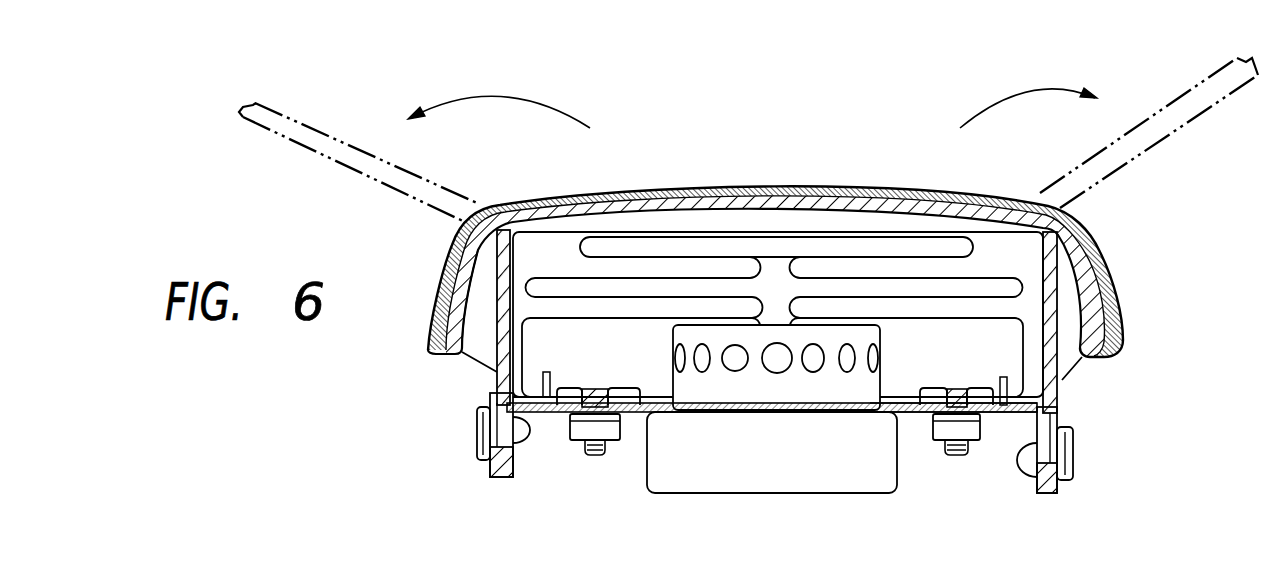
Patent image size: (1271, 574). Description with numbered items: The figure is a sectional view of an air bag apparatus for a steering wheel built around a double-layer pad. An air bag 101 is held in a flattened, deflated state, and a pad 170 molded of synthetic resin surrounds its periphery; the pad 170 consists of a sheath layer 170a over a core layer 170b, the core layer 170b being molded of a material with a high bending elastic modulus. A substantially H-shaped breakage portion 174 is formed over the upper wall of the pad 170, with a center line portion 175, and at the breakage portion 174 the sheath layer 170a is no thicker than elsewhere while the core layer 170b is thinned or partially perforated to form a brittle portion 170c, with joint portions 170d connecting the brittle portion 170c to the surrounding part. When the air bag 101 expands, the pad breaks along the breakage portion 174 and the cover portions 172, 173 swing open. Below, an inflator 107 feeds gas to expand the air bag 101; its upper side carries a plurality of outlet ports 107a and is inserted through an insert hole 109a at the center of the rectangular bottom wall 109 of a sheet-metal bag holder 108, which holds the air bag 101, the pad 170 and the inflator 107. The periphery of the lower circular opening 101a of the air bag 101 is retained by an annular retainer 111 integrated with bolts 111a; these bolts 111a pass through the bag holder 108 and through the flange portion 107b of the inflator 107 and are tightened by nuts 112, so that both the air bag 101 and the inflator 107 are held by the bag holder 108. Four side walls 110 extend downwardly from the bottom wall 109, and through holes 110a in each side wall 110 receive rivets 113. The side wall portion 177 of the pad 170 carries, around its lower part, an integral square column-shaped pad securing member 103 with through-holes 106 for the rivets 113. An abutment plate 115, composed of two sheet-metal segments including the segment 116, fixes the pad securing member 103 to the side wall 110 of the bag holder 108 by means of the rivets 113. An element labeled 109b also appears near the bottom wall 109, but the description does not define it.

The air bag 101 is at (680, 232).
The lower circular opening 101a is at (693, 402).
The pad securing member 103 is at (440, 349).
The through-holes 106 is at (480, 431).
The inflator 107 is at (680, 494).
The outlet ports 107a is at (779, 362).
The flange portion 107b is at (733, 416).
The bag holder 108 is at (552, 410).
The bottom wall 109 is at (772, 452).
The insert hole 109a is at (876, 415).
The plate tab 109b is at (586, 378).
The side walls 110 is at (508, 482).
The through holes 110a is at (533, 450).
The annular retainer 111 is at (912, 378).
The bolts 111a is at (597, 400).
The nuts 112 is at (613, 416).
The rivets 113 is at (483, 445).
The abutment plate 115 is at (786, 476).
The segment 116 is at (786, 476).
The pad 170 is at (775, 214).
The sheath layer 170a is at (719, 190).
The core layer 170b is at (644, 195).
The brittle portion 170c is at (754, 232).
The joint portions 170d is at (782, 202).
The cover portion 172 is at (1000, 207).
The cover portion 173 is at (522, 205).
The breakage portion 174 is at (775, 221).
The center line portion 175 is at (780, 183).
The side wall portion 177 is at (475, 262).